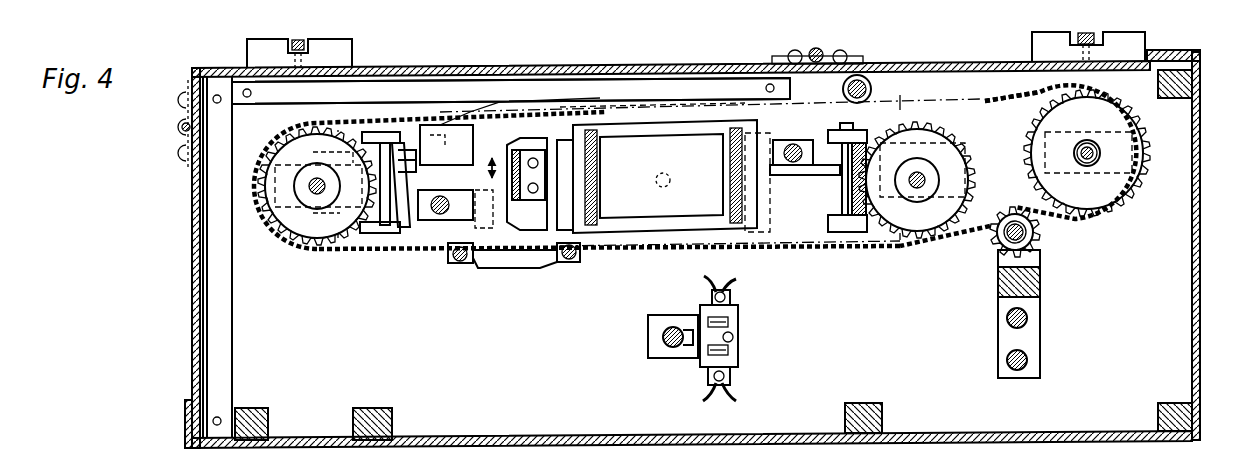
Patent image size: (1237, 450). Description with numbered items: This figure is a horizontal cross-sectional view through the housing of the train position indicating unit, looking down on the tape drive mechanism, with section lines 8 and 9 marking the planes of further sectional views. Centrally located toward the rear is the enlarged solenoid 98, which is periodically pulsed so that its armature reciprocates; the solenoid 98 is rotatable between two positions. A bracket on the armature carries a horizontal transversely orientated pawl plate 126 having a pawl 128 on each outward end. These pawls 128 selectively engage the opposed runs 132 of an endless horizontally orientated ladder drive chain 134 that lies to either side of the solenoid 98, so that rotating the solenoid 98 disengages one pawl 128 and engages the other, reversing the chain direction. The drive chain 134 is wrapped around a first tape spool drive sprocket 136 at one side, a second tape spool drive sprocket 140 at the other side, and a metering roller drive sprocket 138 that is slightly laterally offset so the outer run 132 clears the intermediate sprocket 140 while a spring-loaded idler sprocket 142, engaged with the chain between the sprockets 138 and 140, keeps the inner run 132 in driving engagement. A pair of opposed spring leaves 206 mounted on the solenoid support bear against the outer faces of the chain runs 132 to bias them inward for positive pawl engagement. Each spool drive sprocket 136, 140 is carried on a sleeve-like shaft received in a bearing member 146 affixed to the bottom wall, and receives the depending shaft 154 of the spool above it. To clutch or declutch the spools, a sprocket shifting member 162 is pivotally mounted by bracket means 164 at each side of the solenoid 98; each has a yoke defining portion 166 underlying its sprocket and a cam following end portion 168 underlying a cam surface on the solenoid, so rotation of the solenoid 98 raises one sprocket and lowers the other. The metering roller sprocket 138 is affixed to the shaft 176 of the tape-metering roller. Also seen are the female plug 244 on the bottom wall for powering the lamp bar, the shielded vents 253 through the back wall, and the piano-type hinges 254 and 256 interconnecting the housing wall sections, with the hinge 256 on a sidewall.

The section line 8- 8 is at (455, 98).
The section line 9- 9 is at (744, 118).
The solenoid 98 is at (692, 237).
The pawl plate 126 is at (563, 144).
The pawl 128 is at (556, 143).
The chain run 132 is at (997, 100).
The ladder drive chain 134 is at (870, 245).
The first tape spool drive sprocket 136 is at (294, 232).
The metering roller drive sprocket 138 is at (1105, 185).
The second tape spool drive sprocket 140 is at (933, 217).
The spring-loaded idler sprocket 142 is at (1040, 245).
The bearing member 146 is at (262, 140).
The depending shaft 154 is at (313, 190).
The sprocket shifting member 162 is at (410, 137).
The bracket means 164 is at (404, 240).
The yoke defining portion 166 is at (338, 253).
The cam following end portion 168 is at (413, 140).
The metering roller shaft 176 is at (1085, 148).
The spring leaf 206 is at (457, 117).
The female plug 244 is at (735, 350).
The shielded vent 253 is at (247, 45).
The piano-type hinge 254 is at (815, 52).
The piano-type hinge 256 is at (183, 127).